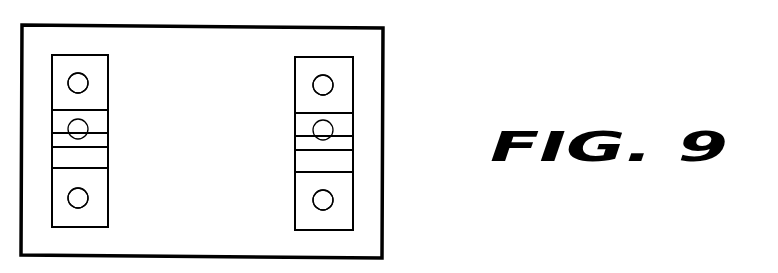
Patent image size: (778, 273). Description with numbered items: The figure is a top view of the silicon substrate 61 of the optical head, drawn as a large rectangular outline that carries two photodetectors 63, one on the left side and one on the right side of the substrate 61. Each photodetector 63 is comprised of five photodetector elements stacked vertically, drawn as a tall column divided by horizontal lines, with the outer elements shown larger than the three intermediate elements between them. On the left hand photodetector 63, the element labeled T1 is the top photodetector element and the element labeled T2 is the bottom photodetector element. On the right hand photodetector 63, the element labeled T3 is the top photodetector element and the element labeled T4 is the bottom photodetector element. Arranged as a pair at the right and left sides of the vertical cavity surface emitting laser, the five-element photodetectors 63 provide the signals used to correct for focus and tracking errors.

The substrate 61 is at (384, 145).
The photodetector 63 is at (108, 65).
The top photodetector element T1 is at (108, 95).
The bottom photodetector element T2 is at (108, 211).
The top photodetector element T3 is at (295, 99).
The bottom photodetector element T4 is at (295, 214).